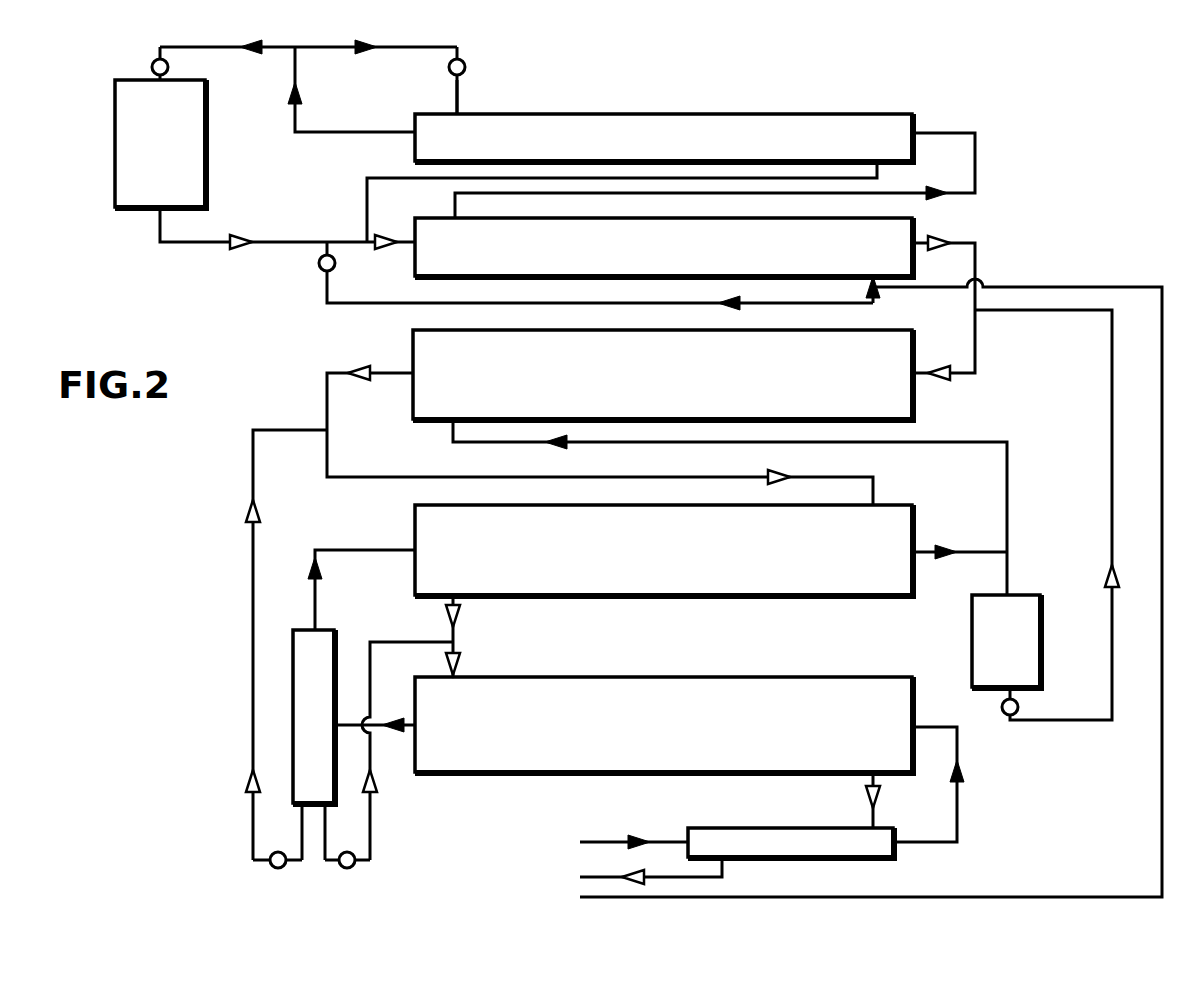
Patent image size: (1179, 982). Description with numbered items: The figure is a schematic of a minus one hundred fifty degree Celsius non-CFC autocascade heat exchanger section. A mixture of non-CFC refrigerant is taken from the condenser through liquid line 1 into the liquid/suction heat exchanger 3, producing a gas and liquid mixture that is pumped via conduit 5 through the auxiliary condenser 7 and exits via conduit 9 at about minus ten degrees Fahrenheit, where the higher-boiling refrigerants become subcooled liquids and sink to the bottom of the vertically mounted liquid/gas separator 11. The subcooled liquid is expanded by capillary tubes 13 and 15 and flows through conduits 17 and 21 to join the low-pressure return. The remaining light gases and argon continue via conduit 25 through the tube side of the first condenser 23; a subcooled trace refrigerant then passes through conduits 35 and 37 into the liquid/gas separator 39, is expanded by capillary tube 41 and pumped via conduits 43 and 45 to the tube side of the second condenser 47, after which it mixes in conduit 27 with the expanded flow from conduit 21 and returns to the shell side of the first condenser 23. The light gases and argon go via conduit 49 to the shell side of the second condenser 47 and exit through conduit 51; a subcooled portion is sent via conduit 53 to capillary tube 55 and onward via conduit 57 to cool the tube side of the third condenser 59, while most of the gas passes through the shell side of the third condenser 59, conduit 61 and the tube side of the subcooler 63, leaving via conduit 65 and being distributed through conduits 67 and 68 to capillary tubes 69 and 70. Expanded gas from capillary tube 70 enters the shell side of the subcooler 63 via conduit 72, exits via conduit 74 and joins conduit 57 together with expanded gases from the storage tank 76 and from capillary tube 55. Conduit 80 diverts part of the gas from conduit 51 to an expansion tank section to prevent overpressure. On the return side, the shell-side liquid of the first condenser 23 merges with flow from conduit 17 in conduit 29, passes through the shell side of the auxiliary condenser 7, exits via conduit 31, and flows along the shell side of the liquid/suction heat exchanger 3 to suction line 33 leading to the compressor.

The liquid line 1 is at (590, 842).
The liquid/suction heat exchanger 3 is at (790, 830).
The conduit 5 is at (958, 812).
The auxiliary condenser 7 is at (644, 741).
The conduit 9 is at (396, 720).
The liquid/gas separator 11 is at (302, 741).
The capillary tube 13 is at (347, 868).
The capillary tube 15 is at (278, 868).
The conduit 17 is at (420, 642).
The conduit 21 is at (252, 742).
The first condenser 23 is at (636, 559).
The conduit 25 is at (388, 550).
The conduit 27 is at (392, 477).
The conduit 29 is at (456, 637).
The conduit 31 is at (877, 813).
The suction line 33 is at (590, 877).
The conduit 35 is at (975, 548).
The conduit 37 is at (1008, 582).
The liquid/gas separator 39 is at (992, 656).
The capillary tube 41 is at (1020, 707).
The conduit 43 is at (1108, 688).
The conduit 45 is at (978, 370).
The second condenser 47 is at (634, 382).
The conduit 49 is at (1008, 502).
The conduit 51 is at (878, 326).
The conduit 53 is at (398, 305).
The capillary tube 55 is at (336, 266).
The conduit 57 is at (348, 240).
The third condenser 59 is at (636, 254).
The conduit 61 is at (955, 190).
The subcooler 63 is at (636, 147).
The conduit 65 is at (393, 130).
The conduit 67 is at (262, 55).
The conduit 68 is at (392, 55).
The capillary tube 69 is at (153, 66).
The capillary tube 70 is at (466, 67).
The conduit 72 is at (457, 93).
The conduit 74 is at (402, 176).
The reservoir or storage tank 76 is at (146, 156).
The conduit 80 is at (1083, 286).